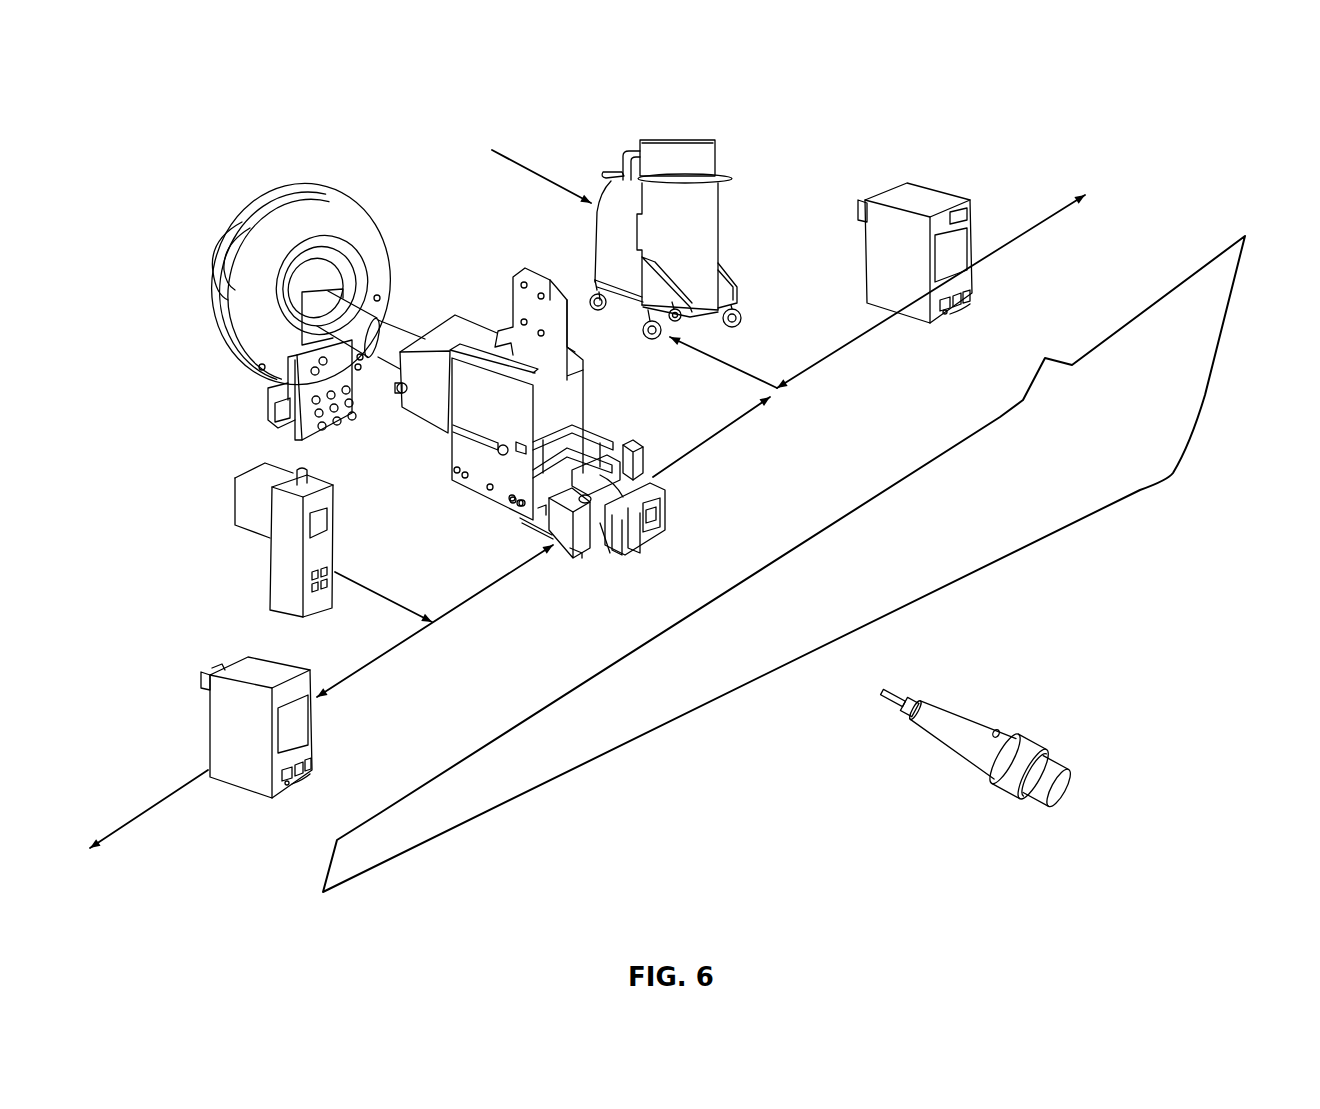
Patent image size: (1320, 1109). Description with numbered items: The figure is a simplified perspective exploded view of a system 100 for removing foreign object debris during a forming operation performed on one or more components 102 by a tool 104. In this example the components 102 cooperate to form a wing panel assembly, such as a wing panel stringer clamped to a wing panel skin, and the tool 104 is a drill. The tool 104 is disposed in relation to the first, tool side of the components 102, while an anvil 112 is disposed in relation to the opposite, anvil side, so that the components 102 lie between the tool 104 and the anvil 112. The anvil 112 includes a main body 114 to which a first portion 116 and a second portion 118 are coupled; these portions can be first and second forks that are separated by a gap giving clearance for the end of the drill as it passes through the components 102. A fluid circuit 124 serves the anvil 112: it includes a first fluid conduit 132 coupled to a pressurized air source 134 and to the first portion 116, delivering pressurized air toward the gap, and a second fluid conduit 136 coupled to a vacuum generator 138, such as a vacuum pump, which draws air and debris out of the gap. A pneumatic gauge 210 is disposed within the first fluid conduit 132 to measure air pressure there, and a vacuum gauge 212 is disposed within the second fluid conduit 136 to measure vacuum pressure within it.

The system 100 is at (1215, 108).
The components 102 is at (1183, 418).
The tool 104 is at (1007, 703).
The anvil 112 is at (551, 390).
The main body 114 is at (354, 186).
The first portion 116 is at (527, 528).
The second portion 118 is at (633, 447).
The fluid circuit 124 is at (737, 430).
The first fluid conduit 132 is at (457, 608).
The pressurized air source 134 is at (233, 512).
The second fluid conduit 136 is at (830, 357).
The vacuum generator 138 is at (708, 140).
The pneumatic gauge 210 is at (220, 668).
The vacuum gauge 212 is at (947, 200).